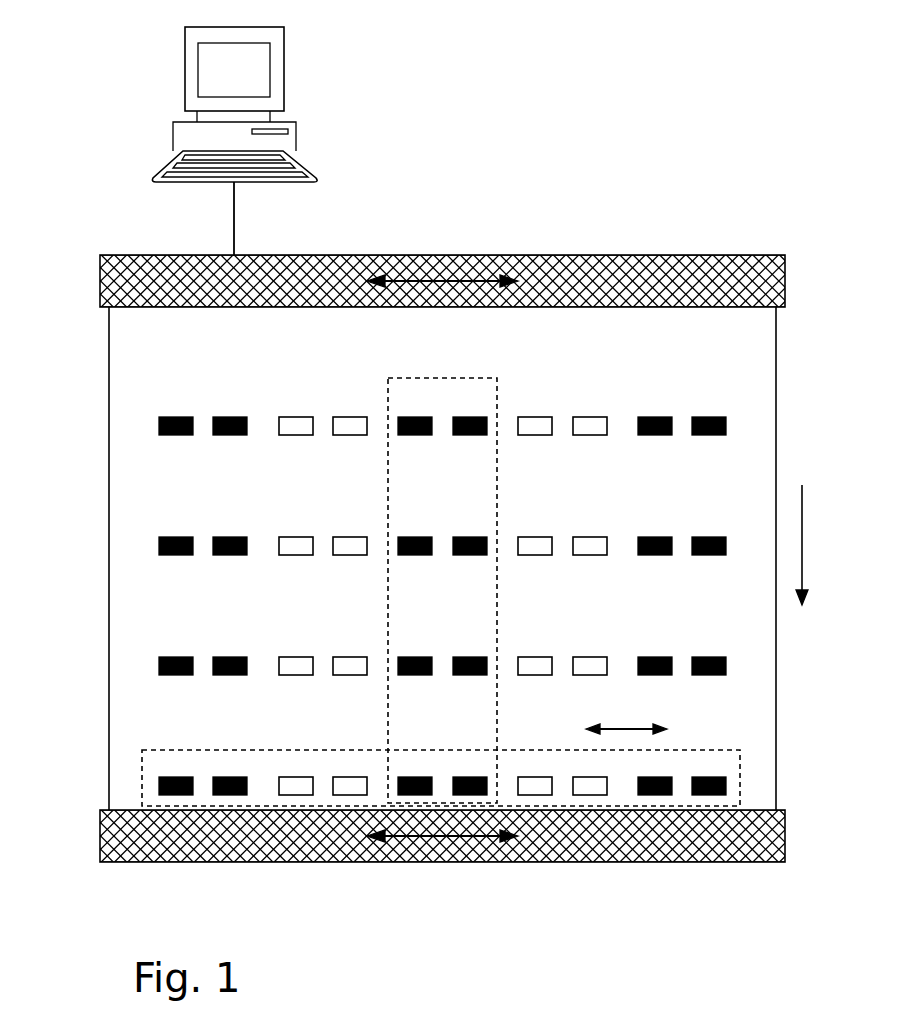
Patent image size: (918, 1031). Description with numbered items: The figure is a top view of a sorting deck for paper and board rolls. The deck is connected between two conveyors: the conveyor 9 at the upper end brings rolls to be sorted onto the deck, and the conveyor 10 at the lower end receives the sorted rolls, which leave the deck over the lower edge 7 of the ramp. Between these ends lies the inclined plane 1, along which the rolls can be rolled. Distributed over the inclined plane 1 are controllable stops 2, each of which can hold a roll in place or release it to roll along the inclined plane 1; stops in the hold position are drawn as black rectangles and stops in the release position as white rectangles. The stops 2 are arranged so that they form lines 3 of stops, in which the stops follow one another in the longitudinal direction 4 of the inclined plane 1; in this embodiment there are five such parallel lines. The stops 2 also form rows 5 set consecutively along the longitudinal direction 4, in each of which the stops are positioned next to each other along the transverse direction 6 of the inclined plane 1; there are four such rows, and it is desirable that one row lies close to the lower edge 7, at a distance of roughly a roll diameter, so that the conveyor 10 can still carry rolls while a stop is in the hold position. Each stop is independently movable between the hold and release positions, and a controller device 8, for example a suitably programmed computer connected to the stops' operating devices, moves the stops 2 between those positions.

The inclined plane 1 is at (115, 482).
The controllable stops 2 is at (700, 417).
The line of stops 3 is at (388, 396).
The longitudinal direction 4 is at (802, 548).
The row of stops 5 is at (232, 750).
The transverse direction 6 is at (622, 729).
The lower edge 7 is at (748, 808).
The controller device 8 is at (185, 68).
The conveyor 9 is at (100, 276).
The conveyor 10 is at (100, 842).